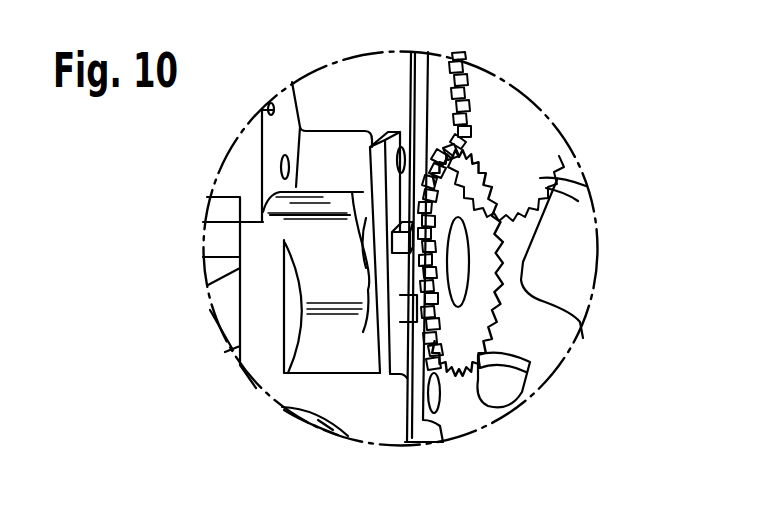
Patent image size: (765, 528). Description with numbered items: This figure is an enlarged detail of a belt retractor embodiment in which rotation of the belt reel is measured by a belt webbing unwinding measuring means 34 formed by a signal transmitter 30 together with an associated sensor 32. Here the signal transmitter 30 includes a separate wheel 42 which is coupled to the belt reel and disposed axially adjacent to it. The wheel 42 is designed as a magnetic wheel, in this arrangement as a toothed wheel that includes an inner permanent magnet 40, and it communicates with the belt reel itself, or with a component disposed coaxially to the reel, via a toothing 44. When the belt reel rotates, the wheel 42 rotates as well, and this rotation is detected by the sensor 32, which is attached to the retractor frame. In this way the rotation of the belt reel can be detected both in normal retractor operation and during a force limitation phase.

The signal transmitter 30 is at (488, 266).
The sensor 32 is at (398, 278).
The belt webbing unwinding measuring means 34 is at (250, 387).
The inner permanent magnet 40 is at (457, 276).
The wheel 42 is at (457, 340).
The toothing 44 is at (467, 118).